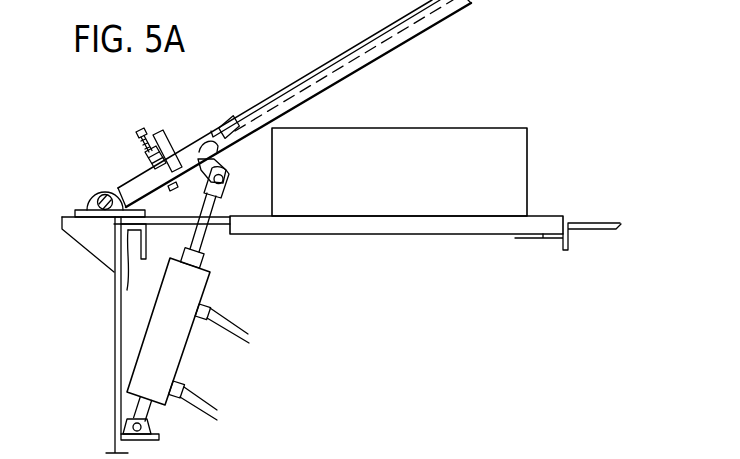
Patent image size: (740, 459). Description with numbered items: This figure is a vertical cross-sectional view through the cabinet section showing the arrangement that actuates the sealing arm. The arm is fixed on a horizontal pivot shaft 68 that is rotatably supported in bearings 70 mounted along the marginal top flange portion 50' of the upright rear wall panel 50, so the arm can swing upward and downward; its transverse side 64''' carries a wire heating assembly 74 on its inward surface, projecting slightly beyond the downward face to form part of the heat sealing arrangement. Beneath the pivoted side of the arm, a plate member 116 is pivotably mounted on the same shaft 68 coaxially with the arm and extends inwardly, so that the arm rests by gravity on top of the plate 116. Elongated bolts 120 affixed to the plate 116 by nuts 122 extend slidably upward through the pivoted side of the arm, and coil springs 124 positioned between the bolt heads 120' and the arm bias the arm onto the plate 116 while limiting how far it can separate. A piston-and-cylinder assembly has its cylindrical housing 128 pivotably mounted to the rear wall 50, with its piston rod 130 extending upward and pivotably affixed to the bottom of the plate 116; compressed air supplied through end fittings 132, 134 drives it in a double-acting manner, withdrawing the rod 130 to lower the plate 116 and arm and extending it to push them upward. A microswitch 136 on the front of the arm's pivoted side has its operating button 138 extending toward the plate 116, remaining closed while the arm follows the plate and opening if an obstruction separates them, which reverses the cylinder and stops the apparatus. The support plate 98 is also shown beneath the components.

The rear wall panel 50 is at (110, 335).
The marginal top flange portion 50' is at (98, 325).
The transverse side of sealing arm 64''' is at (325, 68).
The pivot shaft 68 is at (100, 196).
The bearing 70 is at (96, 196).
The wire heating assembly 74 is at (373, 66).
The support plate 98 is at (398, 236).
The plate member 116 is at (203, 250).
The elongated bolt 120 is at (122, 168).
The bolt head 120' is at (117, 126).
The nut 122 is at (188, 172).
The coil spring 124 is at (158, 132).
The cylindrical housing 128 is at (172, 340).
The piston rod 130 is at (246, 290).
The end fitting 132 is at (180, 400).
The end fitting 134 is at (200, 313).
The microswitch 136 is at (216, 157).
The operating button 138 is at (227, 197).